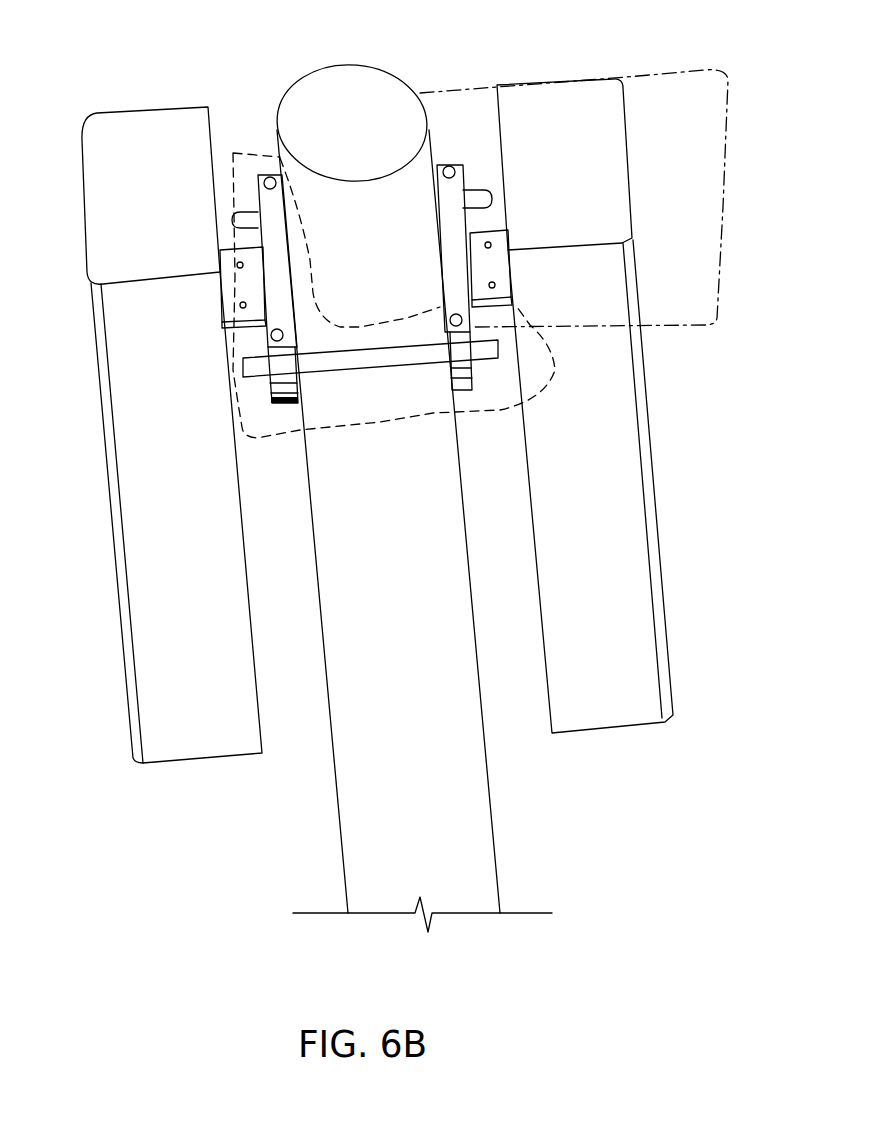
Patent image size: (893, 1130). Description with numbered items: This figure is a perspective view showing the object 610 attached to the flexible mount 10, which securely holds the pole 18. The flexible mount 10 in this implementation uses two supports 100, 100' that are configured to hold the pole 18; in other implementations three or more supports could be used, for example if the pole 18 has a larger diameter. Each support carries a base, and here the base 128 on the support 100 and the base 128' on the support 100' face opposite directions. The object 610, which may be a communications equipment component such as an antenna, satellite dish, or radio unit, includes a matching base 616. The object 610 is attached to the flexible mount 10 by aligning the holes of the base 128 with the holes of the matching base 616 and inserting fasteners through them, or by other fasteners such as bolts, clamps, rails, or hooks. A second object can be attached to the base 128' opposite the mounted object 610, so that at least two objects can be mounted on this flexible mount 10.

The flexible mount 10 is at (470, 66).
The pole 18 is at (343, 82).
The support 100 is at (394, 316).
The support 100' is at (605, 198).
The base 128 is at (214, 290).
The base 128' is at (527, 273).
The object 610 is at (112, 530).
The matching base 616 is at (232, 311).